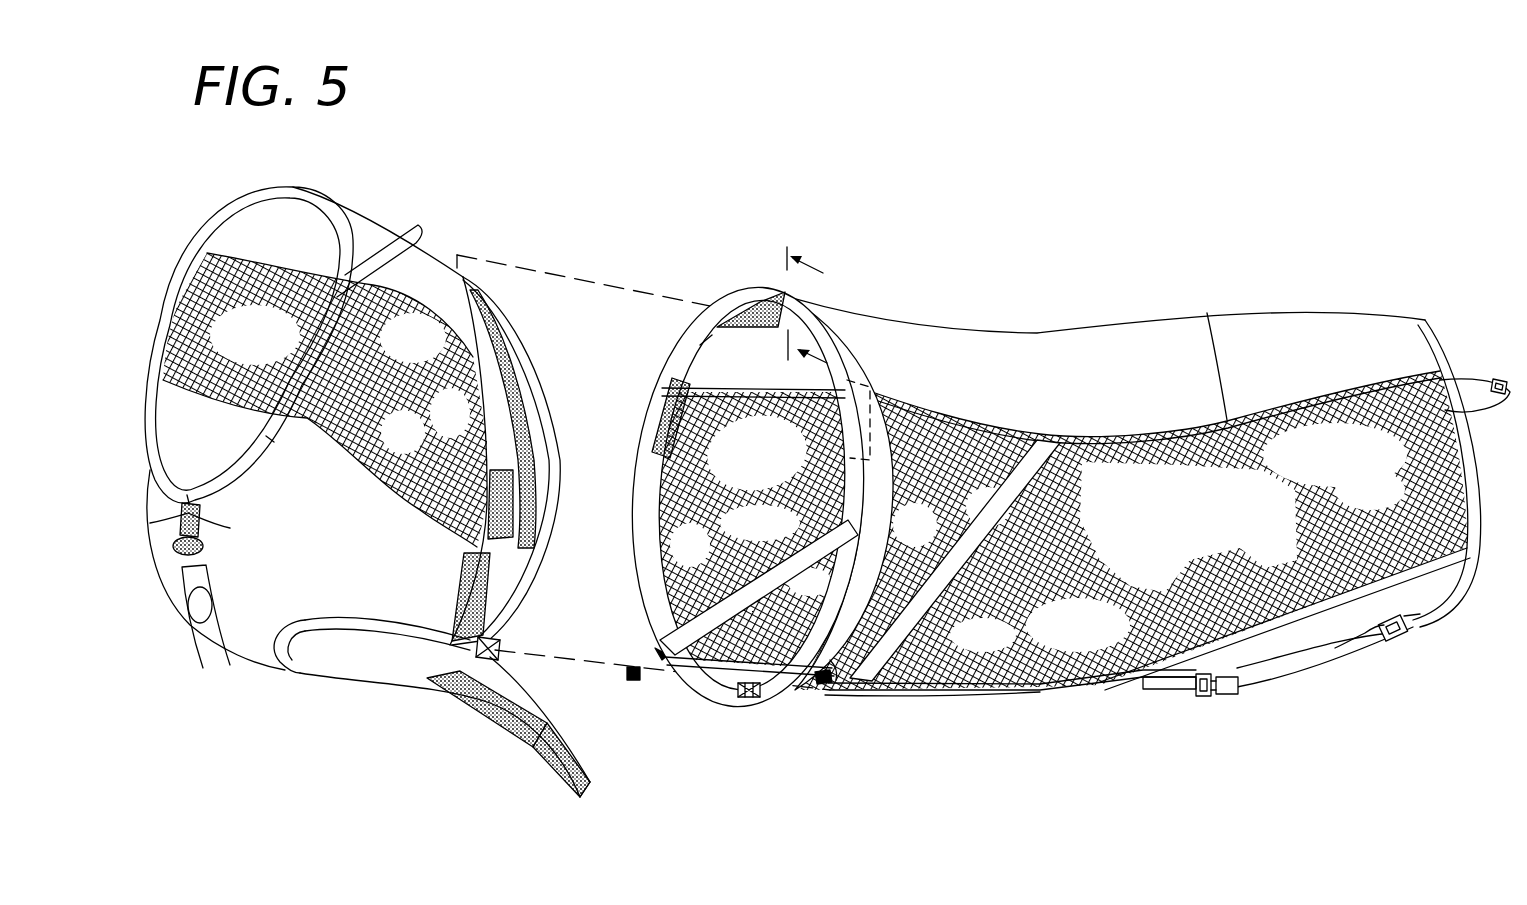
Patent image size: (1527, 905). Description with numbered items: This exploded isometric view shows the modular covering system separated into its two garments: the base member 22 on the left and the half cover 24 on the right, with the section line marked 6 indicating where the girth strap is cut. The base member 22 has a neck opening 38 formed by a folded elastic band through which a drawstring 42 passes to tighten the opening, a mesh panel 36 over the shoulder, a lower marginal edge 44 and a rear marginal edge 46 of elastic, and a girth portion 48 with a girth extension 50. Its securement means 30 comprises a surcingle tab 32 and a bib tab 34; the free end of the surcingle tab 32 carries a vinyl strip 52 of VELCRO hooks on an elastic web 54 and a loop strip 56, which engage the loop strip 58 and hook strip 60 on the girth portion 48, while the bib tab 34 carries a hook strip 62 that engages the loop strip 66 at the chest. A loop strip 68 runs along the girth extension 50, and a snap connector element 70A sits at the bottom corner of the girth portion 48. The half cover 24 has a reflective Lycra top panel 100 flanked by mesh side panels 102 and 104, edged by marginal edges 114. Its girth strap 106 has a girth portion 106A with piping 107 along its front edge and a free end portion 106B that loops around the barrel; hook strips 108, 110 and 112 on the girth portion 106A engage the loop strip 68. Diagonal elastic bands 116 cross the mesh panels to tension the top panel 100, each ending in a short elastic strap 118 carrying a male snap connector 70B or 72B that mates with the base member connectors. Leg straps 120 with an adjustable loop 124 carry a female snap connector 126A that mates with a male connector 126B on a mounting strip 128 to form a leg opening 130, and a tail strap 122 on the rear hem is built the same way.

The base member 22 is at (365, 226).
The half cover 24 is at (928, 330).
The securement means 30 is at (323, 677).
The surcingle tab 32 is at (384, 688).
The bib tab 34 is at (217, 640).
The mesh panel 36 is at (377, 285).
The neck opening 38 is at (270, 442).
The drawstring 42 is at (226, 528).
The lower marginal edge 44 is at (340, 625).
The rear marginal edge 46 is at (548, 508).
The girth portion 48 is at (463, 425).
The girth extension 50 is at (535, 553).
The vinyl strip 52 is at (582, 797).
The elastic web 54 is at (532, 755).
The VELCRO loop strip 56 is at (478, 710).
The VELCRO loop strip 58 is at (490, 510).
The VELCRO hook strip 60 is at (458, 613).
The vinyl strip 62 is at (210, 565).
The VELCRO loop strip 66 is at (205, 542).
The VELCRO loop strip 68 is at (503, 312).
The snap connector element 70A is at (495, 657).
The snap connector 70B is at (745, 702).
The snap connector 72B is at (630, 685).
The top panel 100 is at (1053, 327).
The side panel 102 is at (945, 690).
The side panel 104 is at (640, 615).
The girth strap 106 is at (622, 460).
The girth portion 106A is at (704, 342).
The free end portion 106B is at (855, 665).
The piping 107 is at (838, 355).
The VELCRO hook strip 108 is at (675, 392).
The VELCRO hook strip 110 is at (735, 290).
The VELCRO hook strip 112 is at (878, 388).
The marginal edge 114 is at (1432, 325).
The diagonal band 116 is at (1068, 455).
The elastic strap 118 is at (822, 688).
The leg strap 120 is at (1440, 626).
The tail strap 122 is at (1490, 355).
The adjustable size loop 124 is at (1308, 688).
The female snap connector 126A is at (1228, 697).
The male snap connector 126B is at (1203, 698).
The mounting strip 128 is at (1168, 690).
The adjustable size opening 130 is at (1367, 640).
The section line 6- 6 is at (803, 306).